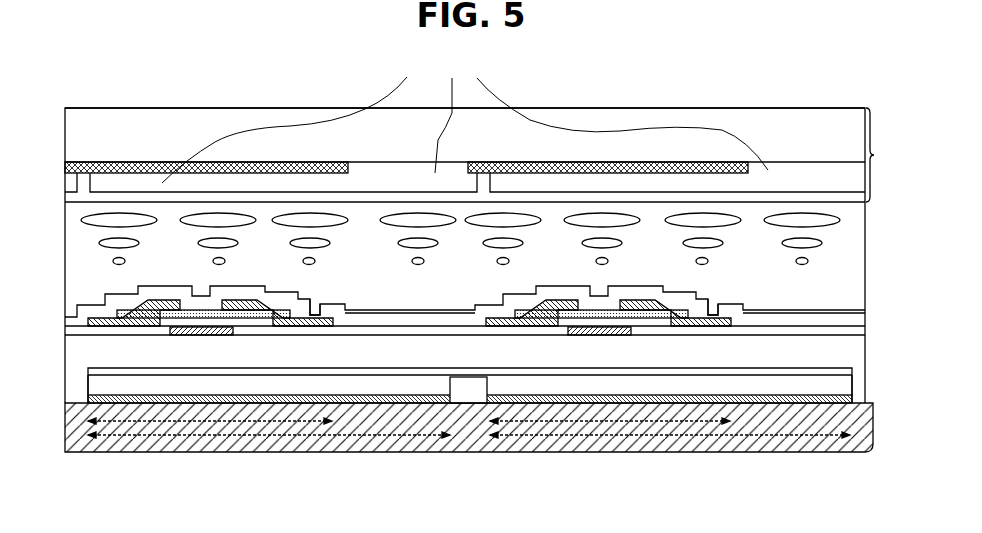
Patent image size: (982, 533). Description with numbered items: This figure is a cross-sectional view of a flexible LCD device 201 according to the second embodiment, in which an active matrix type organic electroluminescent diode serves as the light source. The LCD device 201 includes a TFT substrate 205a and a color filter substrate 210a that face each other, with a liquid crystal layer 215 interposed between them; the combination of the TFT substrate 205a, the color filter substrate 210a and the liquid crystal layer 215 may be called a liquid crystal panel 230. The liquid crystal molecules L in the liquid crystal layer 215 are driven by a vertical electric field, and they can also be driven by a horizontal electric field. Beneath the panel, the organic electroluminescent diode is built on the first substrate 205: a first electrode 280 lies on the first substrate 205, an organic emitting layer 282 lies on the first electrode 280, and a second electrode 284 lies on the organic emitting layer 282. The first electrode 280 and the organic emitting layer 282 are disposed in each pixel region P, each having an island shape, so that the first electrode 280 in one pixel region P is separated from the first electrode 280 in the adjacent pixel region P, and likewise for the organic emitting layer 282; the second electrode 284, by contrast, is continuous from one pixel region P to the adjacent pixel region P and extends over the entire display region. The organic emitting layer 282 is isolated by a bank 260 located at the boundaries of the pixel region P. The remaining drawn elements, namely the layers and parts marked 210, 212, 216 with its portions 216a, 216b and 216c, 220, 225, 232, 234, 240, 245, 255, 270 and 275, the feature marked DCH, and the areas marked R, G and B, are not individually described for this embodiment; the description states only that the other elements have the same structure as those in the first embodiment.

The LCD device 201 is at (826, 79).
The first substrate 205 is at (469, 427).
The TFT substrate 205a is at (868, 403).
The upper substrate 210 is at (862, 131).
The color filter substrate 210a is at (874, 155).
The light blocking layer 212 is at (292, 162).
The liquid crystal layer 215 is at (866, 313).
The color filter layer 216 is at (465, 112).
The red color filter 216a is at (295, 124).
The green color filter 216b is at (450, 119).
The blue color filter 216c is at (450, 57).
The base substrate 220 is at (461, 343).
The gate electrode 225 is at (199, 336).
The liquid crystal panel 230 is at (914, 335).
The source electrode 232 is at (162, 299).
The drain electrode 234 is at (237, 299).
The semiconductor active layer 240 is at (205, 311).
The gate insulating layer 245 is at (413, 331).
The pixel electrode 255 is at (390, 318).
The bank 260 is at (468, 393).
The passivation layer 270 is at (362, 310).
The common electrode 275 is at (366, 203).
The first electrode 280 is at (343, 396).
The organic emitting layer 282 is at (372, 383).
The second electrode 284 is at (388, 371).
The drain contact hole DCH is at (316, 303).
The liquid crystal molecules L is at (722, 243).
The red pixel region R is at (71, 182).
The green pixel region G is at (283, 182).
The blue pixel region B is at (677, 182).
The pixel region P is at (469, 435).